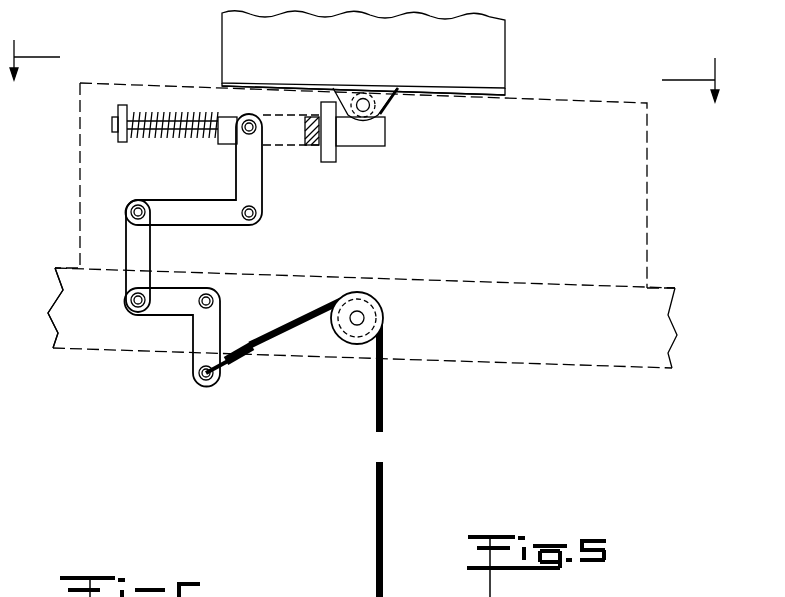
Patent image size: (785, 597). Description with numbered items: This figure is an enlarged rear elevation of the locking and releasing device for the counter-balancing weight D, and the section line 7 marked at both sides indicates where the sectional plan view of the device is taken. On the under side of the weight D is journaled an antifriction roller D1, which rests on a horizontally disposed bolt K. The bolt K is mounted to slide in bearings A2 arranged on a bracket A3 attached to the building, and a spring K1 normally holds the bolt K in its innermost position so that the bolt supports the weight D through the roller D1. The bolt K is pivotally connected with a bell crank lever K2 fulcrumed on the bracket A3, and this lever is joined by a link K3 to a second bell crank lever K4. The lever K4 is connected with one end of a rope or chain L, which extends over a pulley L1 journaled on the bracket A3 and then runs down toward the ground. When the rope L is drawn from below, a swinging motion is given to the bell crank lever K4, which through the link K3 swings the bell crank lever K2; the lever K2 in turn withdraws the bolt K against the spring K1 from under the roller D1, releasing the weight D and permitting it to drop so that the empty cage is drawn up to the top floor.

The section line 7— 7 is at (365, 71).
The counter-balancing weight D is at (228, 50).
The antifriction roller D1 is at (382, 107).
The bolt K is at (367, 137).
The spring K1 is at (152, 140).
The bell crank lever K2 is at (237, 188).
The link K3 is at (133, 256).
The bell crank lever K4 is at (167, 307).
The bearings A2 is at (328, 158).
The bracket A3 is at (81, 264).
The rope or chain L is at (296, 318).
The pulley L1 is at (384, 313).